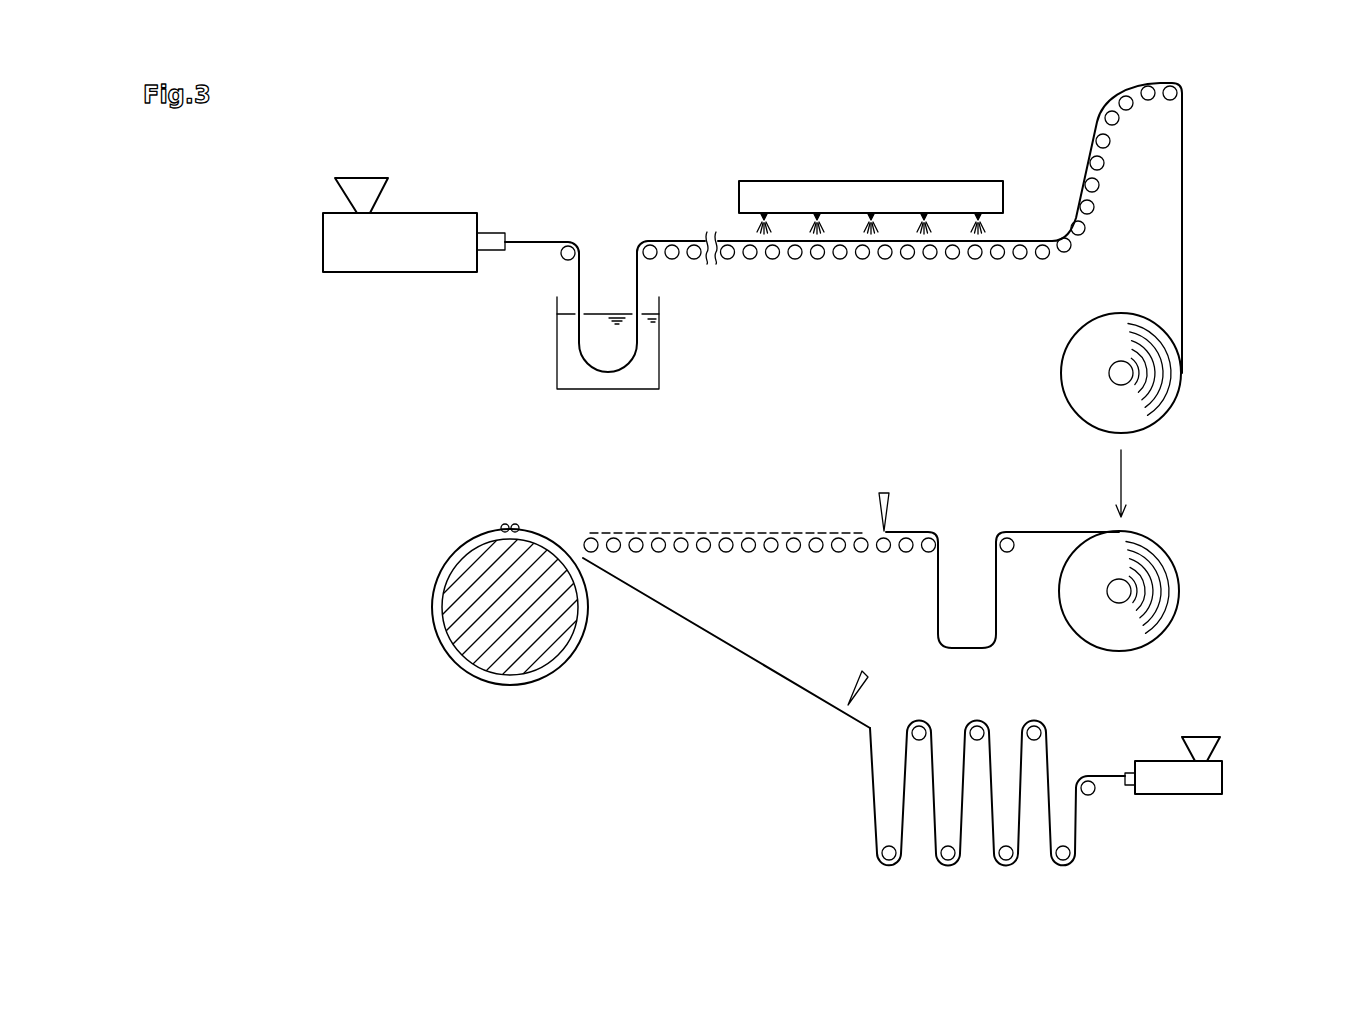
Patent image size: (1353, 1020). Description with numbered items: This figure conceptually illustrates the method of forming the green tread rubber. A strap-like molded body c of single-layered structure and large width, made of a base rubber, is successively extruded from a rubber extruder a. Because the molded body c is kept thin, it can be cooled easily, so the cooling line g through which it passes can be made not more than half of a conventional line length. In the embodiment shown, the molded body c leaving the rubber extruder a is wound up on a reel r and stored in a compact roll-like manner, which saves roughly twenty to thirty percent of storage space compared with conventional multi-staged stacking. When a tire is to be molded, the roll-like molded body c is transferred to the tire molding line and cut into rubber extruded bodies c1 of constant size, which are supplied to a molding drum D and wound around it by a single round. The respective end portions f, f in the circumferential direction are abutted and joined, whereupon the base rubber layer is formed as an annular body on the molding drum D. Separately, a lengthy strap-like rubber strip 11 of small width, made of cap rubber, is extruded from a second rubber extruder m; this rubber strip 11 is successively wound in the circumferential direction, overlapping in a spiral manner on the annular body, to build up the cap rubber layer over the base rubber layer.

The rubber extruder a is at (428, 213).
The molded body c is at (540, 240).
The cooling line g is at (907, 170).
The reel r is at (1153, 388).
The rubber extruded body c1 is at (732, 532).
The end portion f is at (516, 523).
The molding drum D is at (498, 632).
The rubber strip 11 is at (757, 666).
The rubber extruder m is at (1195, 781).